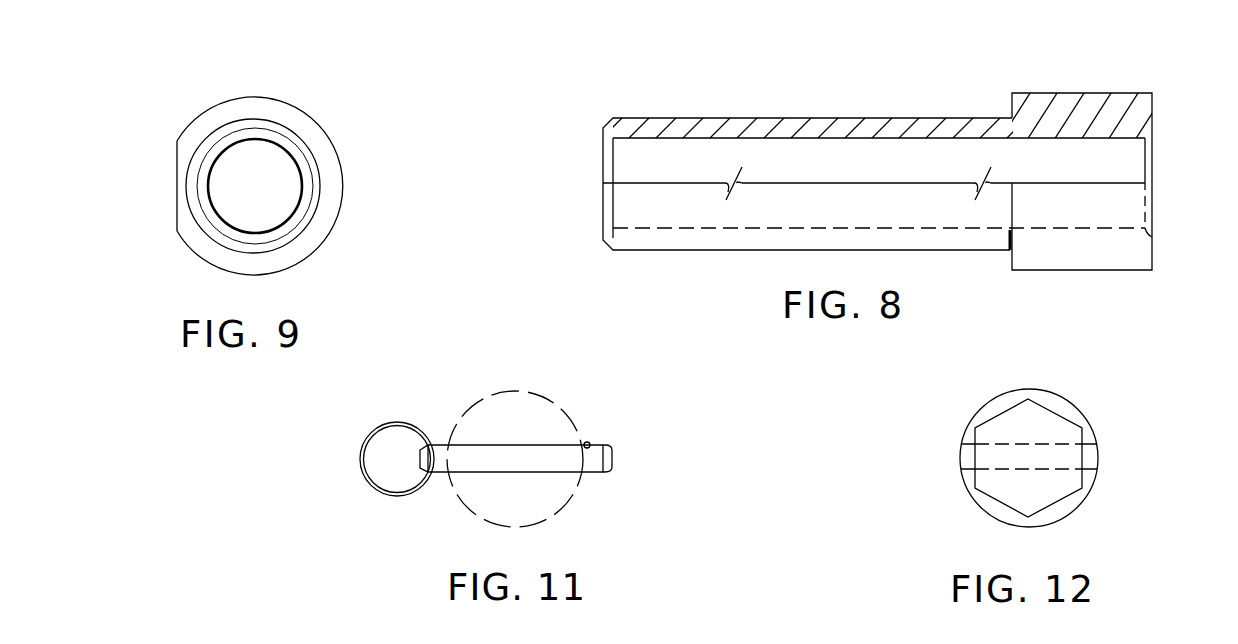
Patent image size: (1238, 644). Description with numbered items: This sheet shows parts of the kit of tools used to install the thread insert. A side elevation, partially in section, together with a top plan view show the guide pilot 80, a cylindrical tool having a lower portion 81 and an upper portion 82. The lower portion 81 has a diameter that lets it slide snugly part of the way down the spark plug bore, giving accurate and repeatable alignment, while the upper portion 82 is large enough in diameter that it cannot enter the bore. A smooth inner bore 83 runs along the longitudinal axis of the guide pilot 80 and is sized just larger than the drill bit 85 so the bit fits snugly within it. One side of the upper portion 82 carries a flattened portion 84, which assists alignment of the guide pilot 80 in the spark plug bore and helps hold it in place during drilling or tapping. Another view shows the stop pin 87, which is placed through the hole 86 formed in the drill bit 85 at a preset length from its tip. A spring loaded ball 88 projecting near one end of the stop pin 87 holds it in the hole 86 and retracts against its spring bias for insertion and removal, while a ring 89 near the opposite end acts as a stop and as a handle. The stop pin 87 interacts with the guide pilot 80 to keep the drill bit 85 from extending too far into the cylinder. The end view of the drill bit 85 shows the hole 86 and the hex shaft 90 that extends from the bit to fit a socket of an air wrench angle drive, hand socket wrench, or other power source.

In FIG. 9, the guide pilot 80 is at (343, 140).
In FIG. 8, the guide pilot 80 is at (840, 108).
In FIG. 9, the lower portion 81 is at (305, 208).
In FIG. 8, the lower portion 81 is at (697, 117).
In FIG. 9, the upper portion 82 is at (300, 250).
In FIG. 8, the upper portion 82 is at (1087, 92).
In FIG. 8, the smooth inner bore 83 is at (1117, 164).
In FIG. 9, the flattened portion 84 is at (177, 196).
In FIG. 12, the drill bit 85 is at (975, 495).
In FIG. 12, the hole 86 is at (960, 458).
In FIG. 11, the stop pin 87 is at (597, 470).
In FIG. 11, the spring loaded ball 88 is at (591, 443).
In FIG. 11, the ring 89 is at (368, 477).
In FIG. 12, the hex shaft 90 is at (1055, 415).